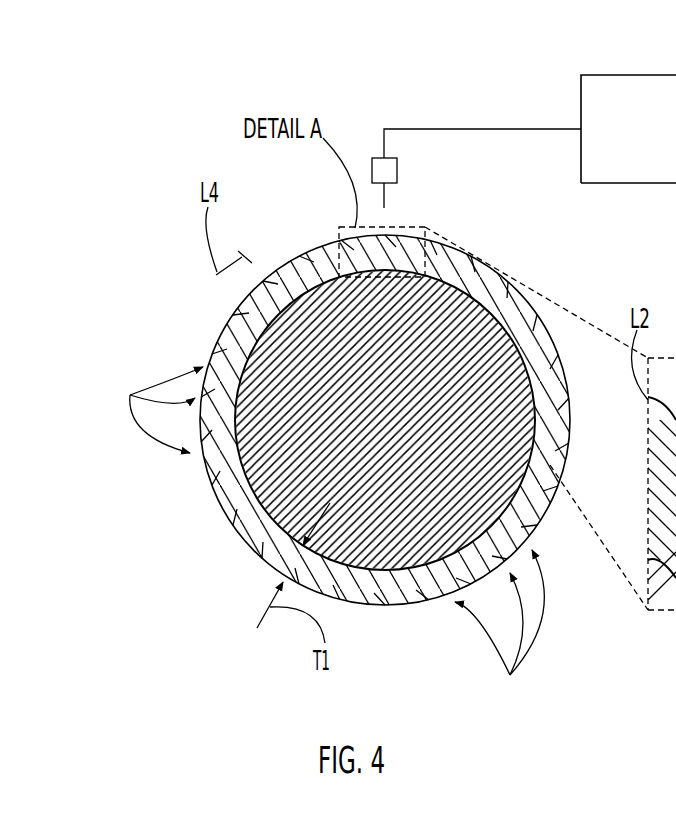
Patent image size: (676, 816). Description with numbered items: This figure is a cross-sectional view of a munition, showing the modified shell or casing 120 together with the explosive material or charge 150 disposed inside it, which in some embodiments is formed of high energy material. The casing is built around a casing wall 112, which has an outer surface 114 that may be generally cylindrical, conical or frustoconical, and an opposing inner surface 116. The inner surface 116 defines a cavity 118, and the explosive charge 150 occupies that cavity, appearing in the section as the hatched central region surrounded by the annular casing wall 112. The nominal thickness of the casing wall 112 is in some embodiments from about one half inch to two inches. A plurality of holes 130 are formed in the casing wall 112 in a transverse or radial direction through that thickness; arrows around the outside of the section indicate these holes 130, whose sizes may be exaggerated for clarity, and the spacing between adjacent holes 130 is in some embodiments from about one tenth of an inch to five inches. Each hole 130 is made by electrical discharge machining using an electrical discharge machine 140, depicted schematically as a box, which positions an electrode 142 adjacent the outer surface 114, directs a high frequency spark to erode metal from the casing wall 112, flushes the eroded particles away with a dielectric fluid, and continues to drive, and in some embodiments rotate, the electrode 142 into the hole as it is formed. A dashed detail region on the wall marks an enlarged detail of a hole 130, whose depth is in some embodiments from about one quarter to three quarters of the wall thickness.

The casing wall 112 is at (212, 492).
The outer surface 114 is at (232, 313).
The inner surface 116 is at (290, 306).
The cavity 118 is at (402, 535).
The modified casing 120 is at (493, 260).
The holes 130 is at (317, 538).
The electrical discharge machine 140 is at (650, 145).
The electrode 142 is at (385, 197).
The explosive charge 150 is at (245, 490).